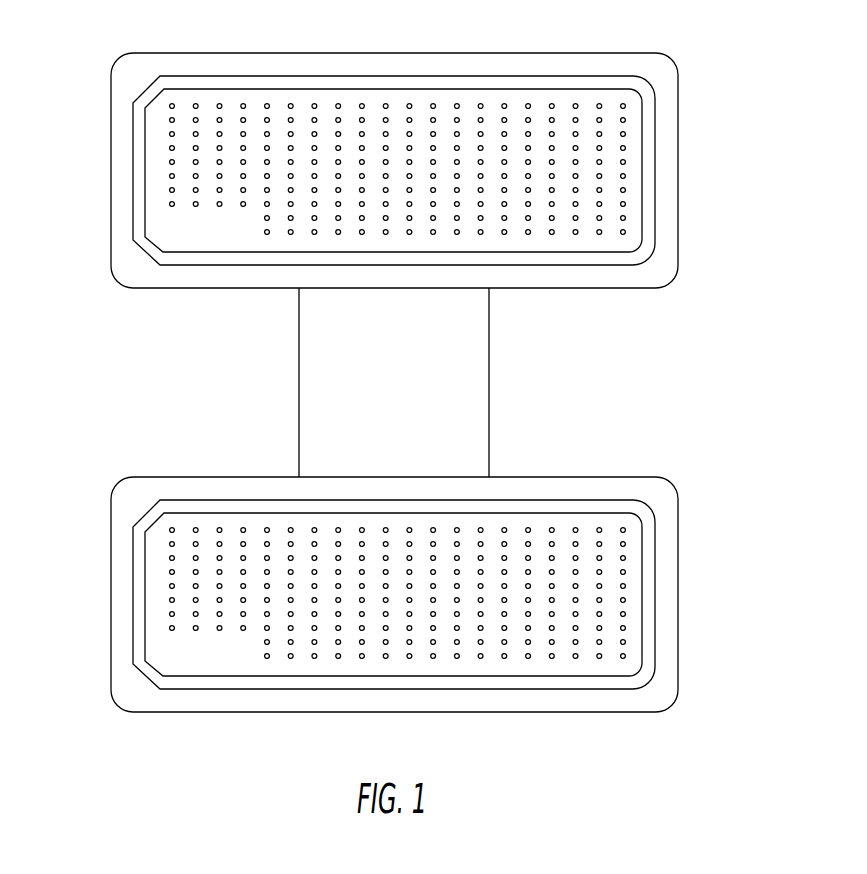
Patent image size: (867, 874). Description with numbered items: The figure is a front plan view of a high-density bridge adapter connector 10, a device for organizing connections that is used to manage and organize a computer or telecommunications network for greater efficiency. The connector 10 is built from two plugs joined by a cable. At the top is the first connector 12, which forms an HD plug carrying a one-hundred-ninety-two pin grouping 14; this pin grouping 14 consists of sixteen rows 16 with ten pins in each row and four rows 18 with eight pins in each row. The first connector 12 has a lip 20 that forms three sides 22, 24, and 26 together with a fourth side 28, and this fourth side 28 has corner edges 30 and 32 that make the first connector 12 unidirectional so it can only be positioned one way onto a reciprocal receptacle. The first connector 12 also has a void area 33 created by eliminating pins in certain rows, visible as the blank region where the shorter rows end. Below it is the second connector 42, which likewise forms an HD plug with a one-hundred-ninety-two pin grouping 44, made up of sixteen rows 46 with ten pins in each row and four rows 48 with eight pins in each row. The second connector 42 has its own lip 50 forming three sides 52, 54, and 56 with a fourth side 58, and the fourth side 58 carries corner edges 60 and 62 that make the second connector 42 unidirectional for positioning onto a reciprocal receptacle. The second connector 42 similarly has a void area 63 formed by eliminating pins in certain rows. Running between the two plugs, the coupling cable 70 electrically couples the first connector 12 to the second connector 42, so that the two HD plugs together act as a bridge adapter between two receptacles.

The high-density bridge adapter connector 10 is at (693, 398).
The first connector 12 is at (690, 178).
The pin grouping 14 is at (637, 112).
The rows 16 is at (625, 243).
The rows 18 is at (245, 103).
The lip 20 is at (258, 258).
The side 22 is at (541, 257).
The side 24 is at (655, 209).
The side 26 is at (460, 82).
The fourth side 28 is at (138, 170).
The corner edge 30 is at (145, 254).
The corner edge 32 is at (145, 92).
The void area 33 is at (208, 240).
The second connector 42 is at (687, 578).
The pin grouping 44 is at (628, 539).
The rows 46 is at (622, 668).
The rows 48 is at (230, 518).
The lip 50 is at (255, 682).
The side 52 is at (537, 690).
The side 54 is at (655, 635).
The side 56 is at (400, 503).
The fourth side 58 is at (132, 592).
The corner edge 60 is at (148, 670).
The corner edge 62 is at (147, 510).
The void area 63 is at (202, 667).
The coupling cable 70 is at (489, 392).